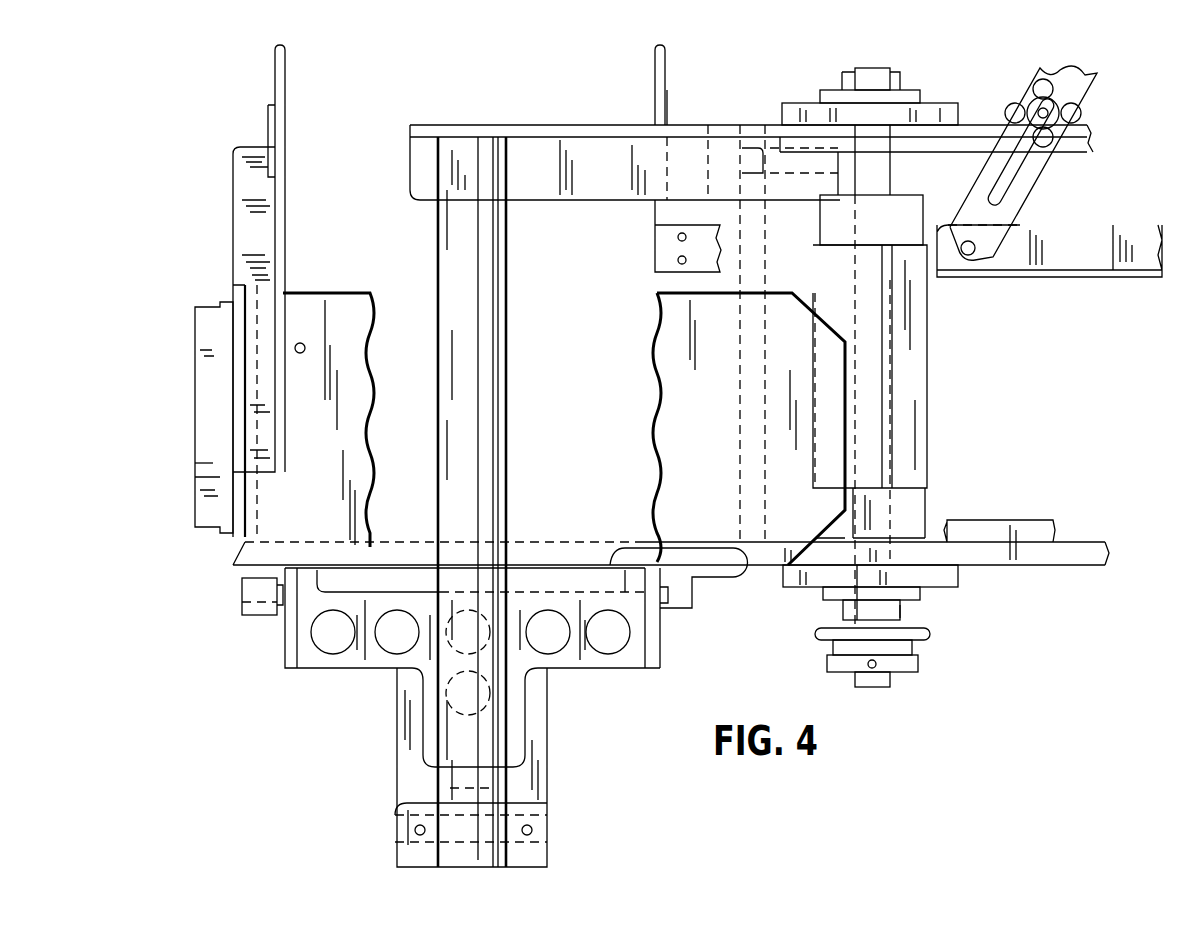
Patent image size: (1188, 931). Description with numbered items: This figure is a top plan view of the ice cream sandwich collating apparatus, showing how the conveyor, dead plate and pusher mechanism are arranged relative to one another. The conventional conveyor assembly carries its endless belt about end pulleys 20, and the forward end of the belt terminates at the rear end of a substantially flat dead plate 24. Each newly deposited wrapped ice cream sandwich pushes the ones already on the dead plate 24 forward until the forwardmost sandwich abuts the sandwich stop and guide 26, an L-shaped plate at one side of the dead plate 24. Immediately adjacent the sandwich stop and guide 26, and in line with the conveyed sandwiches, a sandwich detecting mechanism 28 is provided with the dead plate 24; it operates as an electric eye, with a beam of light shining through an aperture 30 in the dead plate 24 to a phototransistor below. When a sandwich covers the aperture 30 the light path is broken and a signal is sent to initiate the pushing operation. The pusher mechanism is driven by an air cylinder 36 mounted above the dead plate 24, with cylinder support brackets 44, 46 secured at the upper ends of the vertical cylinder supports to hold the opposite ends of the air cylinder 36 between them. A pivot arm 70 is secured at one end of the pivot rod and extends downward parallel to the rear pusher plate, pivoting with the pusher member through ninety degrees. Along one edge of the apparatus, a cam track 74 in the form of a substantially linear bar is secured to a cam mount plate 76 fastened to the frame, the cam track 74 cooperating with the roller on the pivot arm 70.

The end pulleys 20 is at (932, 376).
The dead plate 24 is at (263, 532).
The sandwich stop and guide 26 is at (233, 265).
The sandwich detecting mechanism 28 is at (298, 335).
The aperture 30 is at (306, 347).
The air cylinder 36 is at (488, 357).
The cylinder support bracket 44 is at (557, 193).
The cylinder support bracket 46 is at (540, 852).
The pivot arm 70 is at (265, 617).
The cam track 74 is at (240, 332).
The cam mount plate 76 is at (202, 463).